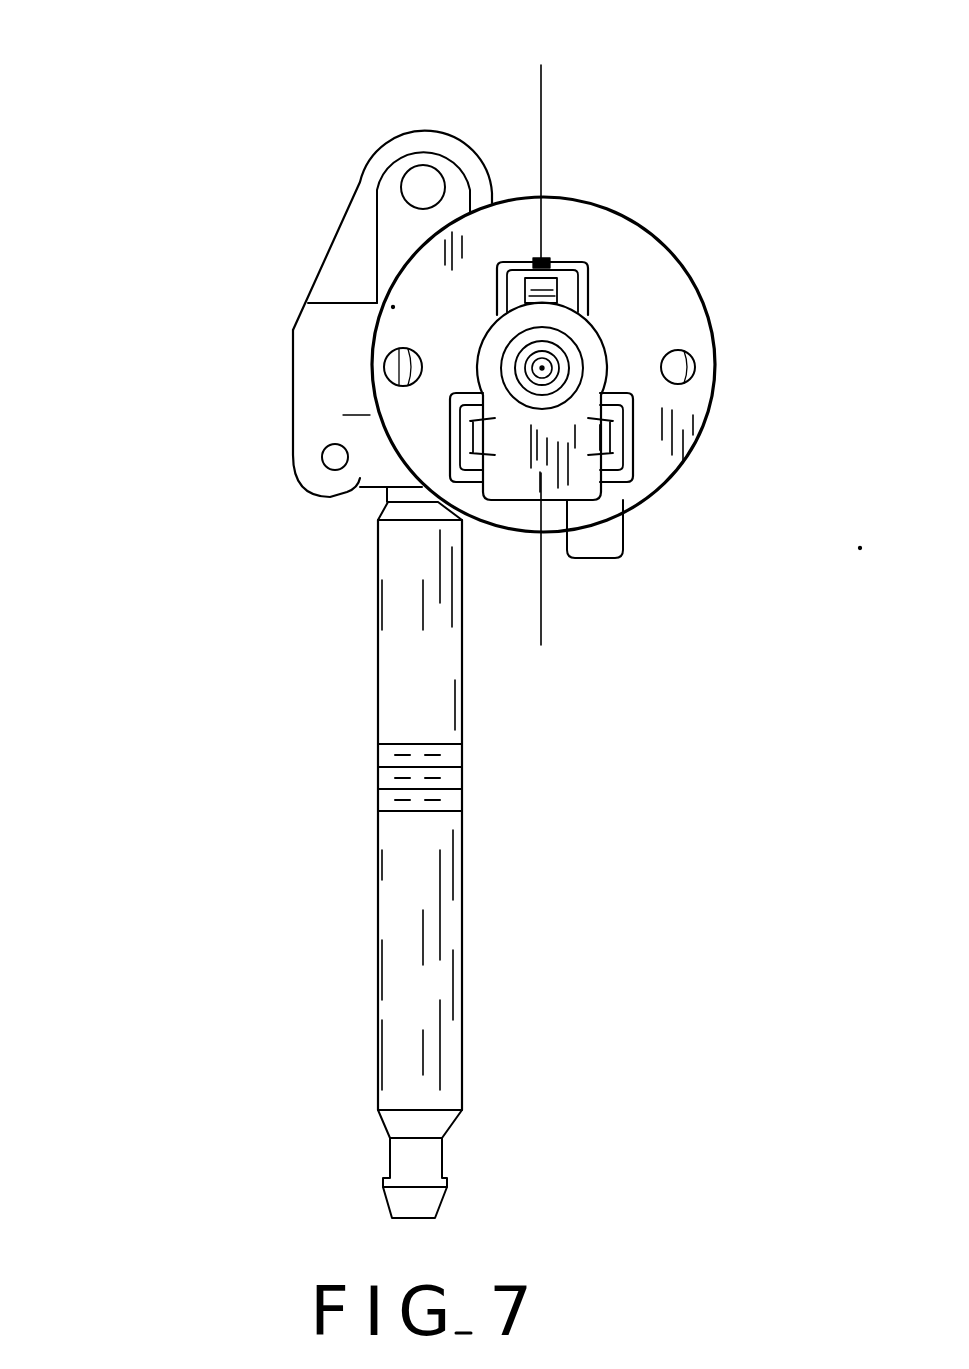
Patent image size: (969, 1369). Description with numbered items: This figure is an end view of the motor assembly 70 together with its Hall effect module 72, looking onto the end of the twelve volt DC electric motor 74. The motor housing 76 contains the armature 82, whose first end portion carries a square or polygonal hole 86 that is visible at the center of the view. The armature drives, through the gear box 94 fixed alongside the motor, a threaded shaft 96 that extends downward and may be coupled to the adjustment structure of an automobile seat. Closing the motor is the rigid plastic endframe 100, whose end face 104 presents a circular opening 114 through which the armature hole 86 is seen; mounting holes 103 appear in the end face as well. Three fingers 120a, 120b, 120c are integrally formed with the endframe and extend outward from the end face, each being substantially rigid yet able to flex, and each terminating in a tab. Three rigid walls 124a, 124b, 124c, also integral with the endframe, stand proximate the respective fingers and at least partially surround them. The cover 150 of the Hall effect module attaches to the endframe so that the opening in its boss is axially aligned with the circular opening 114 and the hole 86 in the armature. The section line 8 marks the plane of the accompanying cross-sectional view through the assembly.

The motor assembly 70 is at (113, 71).
The Hall effect module 72 is at (622, 341).
The electric motor 74 is at (654, 163).
The motor housing 76 is at (380, 330).
The armature 82 is at (542, 368).
The hole 86 is at (548, 369).
The gear box 94 is at (347, 253).
The threaded shaft 96 is at (398, 911).
The endframe 100 is at (677, 433).
The mounting holes 103 is at (393, 363).
The end face 104 is at (411, 503).
The circular opening 114 is at (558, 356).
The finger 120a is at (520, 280).
The finger 120b is at (610, 437).
The finger 120c is at (477, 433).
The rigid wall 124a is at (580, 267).
The rigid wall 124b is at (630, 473).
The rigid wall 124c is at (447, 447).
The cover 150 is at (570, 477).
The section line 8 is at (547, 73).